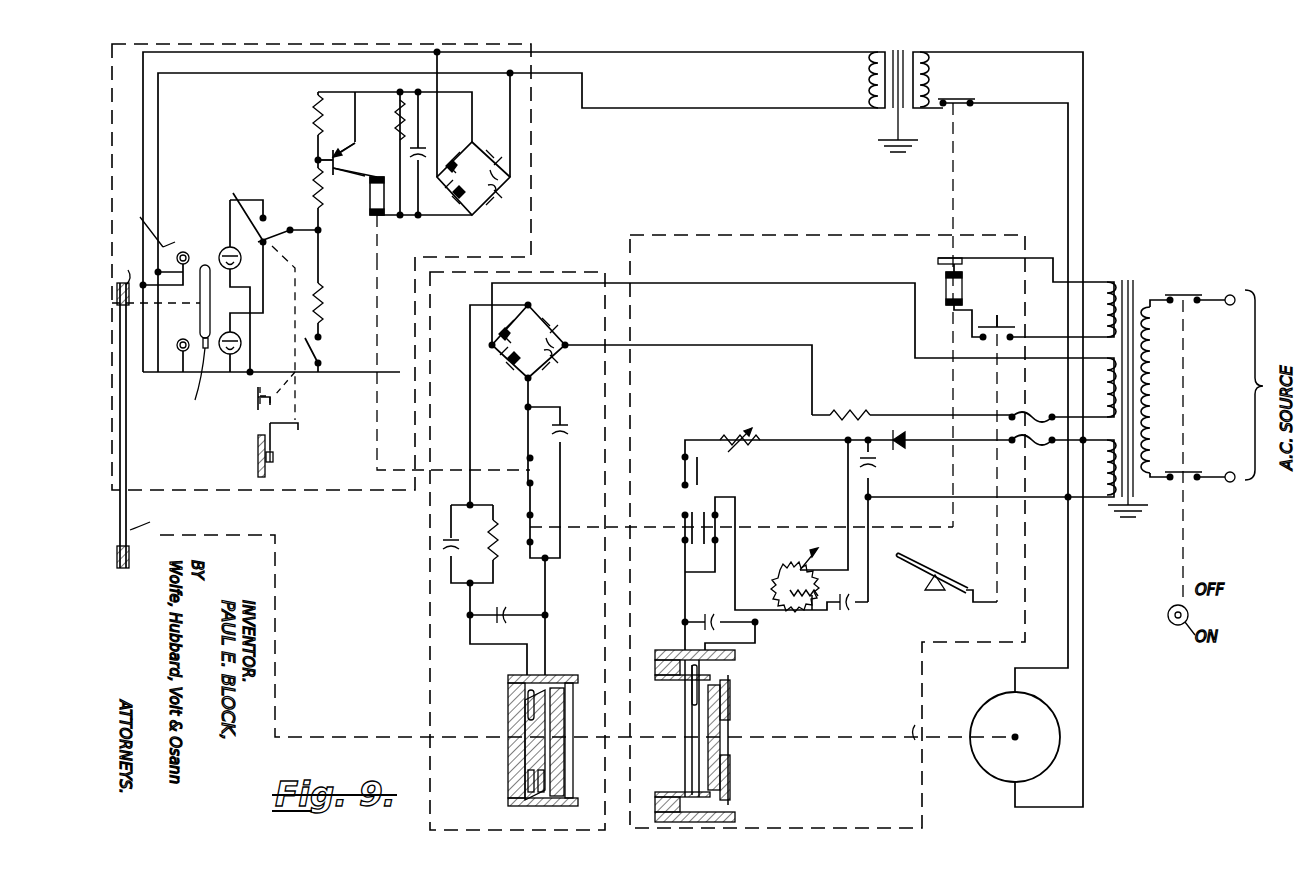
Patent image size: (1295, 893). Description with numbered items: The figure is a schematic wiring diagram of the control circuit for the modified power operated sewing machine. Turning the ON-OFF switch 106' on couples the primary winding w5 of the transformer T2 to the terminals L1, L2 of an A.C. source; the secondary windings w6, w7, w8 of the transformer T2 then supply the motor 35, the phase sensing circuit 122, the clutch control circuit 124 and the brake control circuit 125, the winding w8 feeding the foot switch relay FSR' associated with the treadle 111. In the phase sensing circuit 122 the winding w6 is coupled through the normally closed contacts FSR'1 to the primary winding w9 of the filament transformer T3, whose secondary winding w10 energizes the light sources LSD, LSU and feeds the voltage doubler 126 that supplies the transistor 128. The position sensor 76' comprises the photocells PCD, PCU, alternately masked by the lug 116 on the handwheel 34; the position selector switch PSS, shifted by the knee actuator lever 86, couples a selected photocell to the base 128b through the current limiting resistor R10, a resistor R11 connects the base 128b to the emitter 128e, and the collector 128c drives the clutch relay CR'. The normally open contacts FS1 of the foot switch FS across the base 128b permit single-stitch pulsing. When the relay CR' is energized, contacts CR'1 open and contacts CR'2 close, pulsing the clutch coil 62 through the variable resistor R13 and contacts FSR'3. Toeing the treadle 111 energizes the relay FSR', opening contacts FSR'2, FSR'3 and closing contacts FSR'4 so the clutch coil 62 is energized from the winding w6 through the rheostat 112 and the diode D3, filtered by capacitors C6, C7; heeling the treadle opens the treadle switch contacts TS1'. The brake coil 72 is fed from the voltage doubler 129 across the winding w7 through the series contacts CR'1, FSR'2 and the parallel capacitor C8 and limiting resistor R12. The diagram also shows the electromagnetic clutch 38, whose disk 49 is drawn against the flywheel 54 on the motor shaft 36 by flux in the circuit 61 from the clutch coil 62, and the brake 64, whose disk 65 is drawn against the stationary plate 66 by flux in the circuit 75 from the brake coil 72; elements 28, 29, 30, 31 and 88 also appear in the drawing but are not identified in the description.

The phase sensing circuit 122 is at (532, 218).
The clutch control circuit 124 is at (698, 236).
The brake control circuit 125 is at (547, 272).
The voltage doubler 126 is at (512, 171).
The voltage doubler 129 is at (557, 323).
The transistor 128 is at (340, 154).
The emitter 128e is at (325, 138).
The base 128b is at (322, 160).
The collector 128c is at (358, 193).
The current limiting resistor R10 is at (315, 197).
The resistor R11 is at (310, 117).
The limiting resistor R12 is at (495, 566).
The variable resistor R13 is at (740, 430).
The capacitor C6 is at (857, 466).
The capacitor C7 is at (850, 613).
The capacitor C8 is at (442, 548).
The diode D3 is at (900, 446).
The clutch relay CR' is at (431, 323).
The normally closed contacts CR'1 is at (507, 458).
The normally open contacts CR'2 is at (720, 471).
The foot switch relay FSR' is at (1003, 293).
The normally closed contacts FSR'1 is at (988, 299).
The normally closed contacts FSR'2 is at (740, 550).
The normally closed contacts FSR'3 is at (664, 543).
The normally open contacts FSR'4 is at (752, 522).
The treadle switch contacts TS1' is at (1042, 312).
The position selector switch PSS is at (233, 193).
The photocell PCU is at (227, 247).
The photocell PCD is at (241, 346).
The light source LSU is at (196, 243).
The light source LSD is at (180, 358).
The foot switch FS is at (257, 410).
The normally open contacts FS1 is at (325, 355).
The transformer T2 is at (1134, 272).
The filament transformer T3 is at (890, 109).
The primary winding w5 is at (1150, 355).
The secondary winding w6 is at (1103, 490).
The secondary winding w7 is at (1103, 400).
The secondary winding w8 is at (1103, 325).
The primary winding w9 is at (923, 76).
The secondary winding w10 is at (880, 94).
The terminal L1 is at (1229, 295).
The terminal L2 is at (1229, 472).
The ON-OFF switch 106' is at (1205, 467).
The guide rail 28 is at (126, 432).
The rail end 29 is at (129, 264).
The rail end 30 is at (151, 516).
The drive shaft 31 is at (253, 527).
The handwheel 34 is at (200, 318).
The motor 35 is at (995, 775).
The motor shaft 36 is at (893, 724).
The electromagnetic friction clutch 38 is at (702, 730).
The internally splined disk 49 is at (725, 730).
The flywheel 54 is at (732, 780).
The toroidal shaped flux circuit 61 is at (668, 675).
The clutch coil 62 is at (677, 800).
The electromagnetic friction brake 64 is at (513, 745).
The brake disk 65 is at (565, 760).
The stationary plate 66 is at (560, 730).
The brake coil 72 is at (518, 784).
The toroidal shaped flux circuit 75 is at (508, 695).
The position sensor 76' is at (145, 220).
The knee actuator lever 86 is at (290, 432).
The feeler 88 is at (258, 450).
The treadle 111 is at (918, 556).
The treadle controlled rheostat 112 is at (803, 594).
The masking lug 116 is at (211, 379).